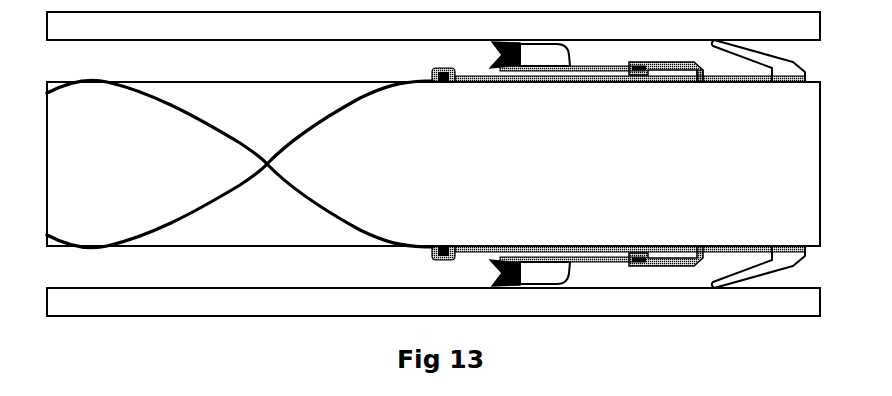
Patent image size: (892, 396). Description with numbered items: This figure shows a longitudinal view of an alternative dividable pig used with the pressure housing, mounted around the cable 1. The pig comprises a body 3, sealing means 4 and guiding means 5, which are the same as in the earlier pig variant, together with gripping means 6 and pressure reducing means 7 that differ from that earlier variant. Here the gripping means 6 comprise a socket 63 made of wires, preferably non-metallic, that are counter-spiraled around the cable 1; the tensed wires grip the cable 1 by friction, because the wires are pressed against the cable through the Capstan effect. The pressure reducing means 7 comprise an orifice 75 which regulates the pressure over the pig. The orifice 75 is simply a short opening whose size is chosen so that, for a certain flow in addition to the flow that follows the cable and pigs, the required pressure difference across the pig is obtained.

The cable 1 is at (129, 172).
The body 3 is at (611, 88).
The sealing means 4 is at (509, 40).
The guiding means 5 is at (574, 272).
The gripping means 6 is at (346, 113).
The socket 63 is at (336, 210).
The pressure reducing means 7 is at (694, 55).
The orifice 75 is at (708, 71).